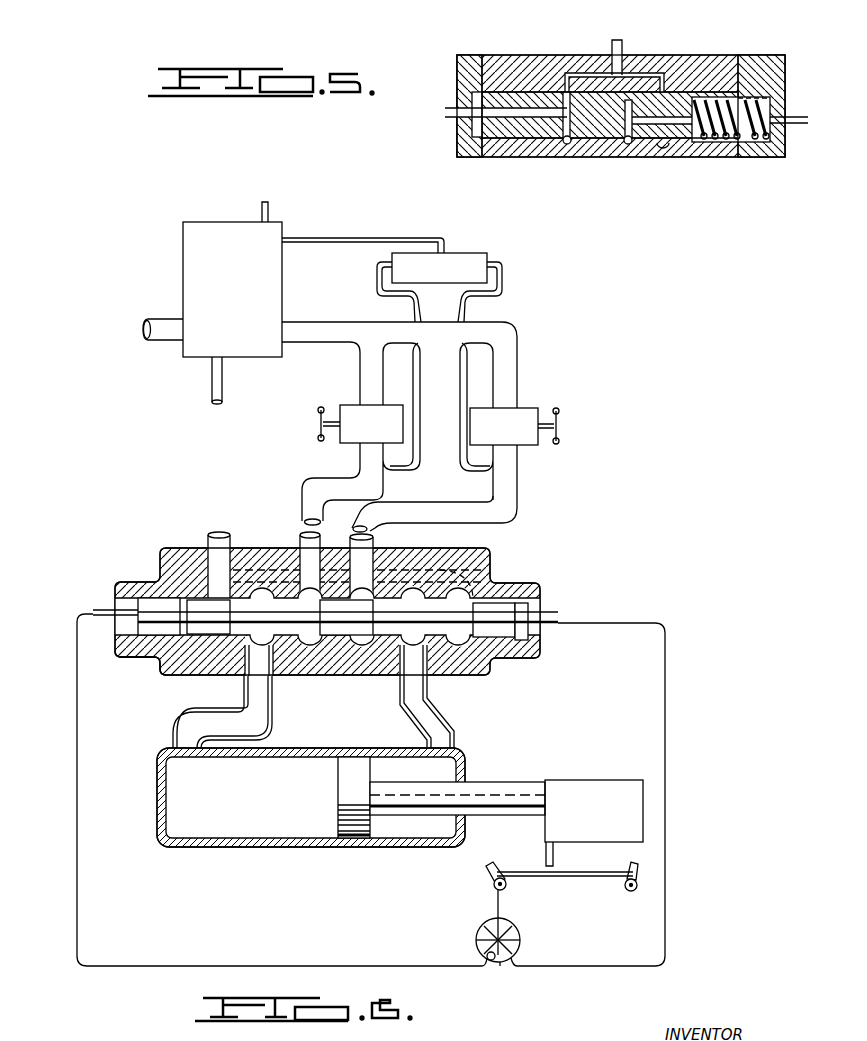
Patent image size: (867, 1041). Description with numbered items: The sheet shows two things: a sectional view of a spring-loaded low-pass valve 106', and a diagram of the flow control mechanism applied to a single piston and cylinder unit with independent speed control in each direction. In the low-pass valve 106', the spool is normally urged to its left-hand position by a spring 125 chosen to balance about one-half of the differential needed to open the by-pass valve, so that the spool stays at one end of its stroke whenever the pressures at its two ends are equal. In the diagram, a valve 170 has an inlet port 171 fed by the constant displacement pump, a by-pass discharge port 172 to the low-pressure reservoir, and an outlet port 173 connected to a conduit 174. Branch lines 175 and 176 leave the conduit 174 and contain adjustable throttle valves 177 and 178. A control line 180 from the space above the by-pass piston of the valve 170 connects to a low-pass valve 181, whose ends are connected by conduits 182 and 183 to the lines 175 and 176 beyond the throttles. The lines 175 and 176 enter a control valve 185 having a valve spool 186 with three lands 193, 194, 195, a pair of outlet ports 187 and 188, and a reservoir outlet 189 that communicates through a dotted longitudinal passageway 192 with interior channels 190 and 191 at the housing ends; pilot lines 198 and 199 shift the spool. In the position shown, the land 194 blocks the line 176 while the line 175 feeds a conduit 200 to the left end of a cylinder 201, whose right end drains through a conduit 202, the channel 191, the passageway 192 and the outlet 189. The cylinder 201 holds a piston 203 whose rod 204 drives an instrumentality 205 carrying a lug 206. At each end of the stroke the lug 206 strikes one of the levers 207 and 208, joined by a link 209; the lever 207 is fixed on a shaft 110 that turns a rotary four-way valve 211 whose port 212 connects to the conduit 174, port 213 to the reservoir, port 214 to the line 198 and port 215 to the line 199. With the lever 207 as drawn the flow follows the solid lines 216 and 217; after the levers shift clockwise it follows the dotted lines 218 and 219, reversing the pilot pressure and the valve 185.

In FIG. 5, the low-pass valve 106' is at (626, 90).
In FIG. 5, the spring 125 is at (720, 136).
In FIG. 6, the valve 170 is at (191, 262).
In FIG. 6, the inlet port 171 is at (176, 342).
In FIG. 6, the by-pass discharge port 172 is at (213, 376).
In FIG. 6, the outlet port 173 is at (292, 322).
In FIG. 6, the conduit 174 is at (327, 338).
In FIG. 6, the branch line 175 is at (365, 380).
In FIG. 6, the branch line 176 is at (507, 382).
In FIG. 6, the adjustable throttle valve 177 is at (352, 437).
In FIG. 6, the adjustable throttle valve 178 is at (527, 440).
In FIG. 6, the control line 180 is at (322, 238).
In FIG. 6, the low-pass valve 181 is at (462, 262).
In FIG. 6, the conduit 182 is at (416, 364).
In FIG. 6, the conduit 183 is at (458, 393).
In FIG. 6, the control valve 185 is at (326, 621).
In FIG. 6, the valve spool 186 is at (176, 662).
In FIG. 6, the outlet port 187 is at (283, 688).
In FIG. 6, the outlet port 188 is at (398, 692).
In FIG. 6, the outlet 189 is at (213, 536).
In FIG. 6, the interior channel 190 is at (222, 642).
In FIG. 6, the interior channel 191 is at (492, 583).
In FIG. 6, the longitudinal passageway 192 is at (415, 563).
In FIG. 6, the land 193 is at (175, 605).
In FIG. 6, the land 194 is at (350, 640).
In FIG. 6, the land 195 is at (505, 660).
In FIG. 6, the pilot line 198 is at (76, 632).
In FIG. 6, the pilot line 199 is at (592, 622).
In FIG. 6, the conduit 200 is at (272, 723).
In FIG. 6, the cylinder 201 is at (247, 850).
In FIG. 6, the conduit 202 is at (442, 714).
In FIG. 6, the piston 203 is at (360, 840).
In FIG. 6, the rod 204 is at (505, 792).
In FIG. 6, the instrumentality 205 is at (633, 760).
In FIG. 6, the lug 206 is at (555, 858).
In FIG. 6, the lever 207 is at (493, 866).
In FIG. 6, the lever 208 is at (635, 869).
In FIG. 6, the link 209 is at (583, 877).
In FIG. 6, the shaft 110 is at (503, 908).
In FIG. 6, the rotary four-way valve 211 is at (534, 945).
In FIG. 6, the port 212 is at (477, 910).
In FIG. 6, the port 213 is at (531, 927).
In FIG. 6, the port 214 is at (482, 958).
In FIG. 6, the port 215 is at (515, 960).
In FIG. 6, the flow line 216 is at (480, 937).
In FIG. 6, the flow line 217 is at (525, 937).
In FIG. 6, the flow line 218 is at (500, 965).
In FIG. 6, the flow line 219 is at (490, 963).